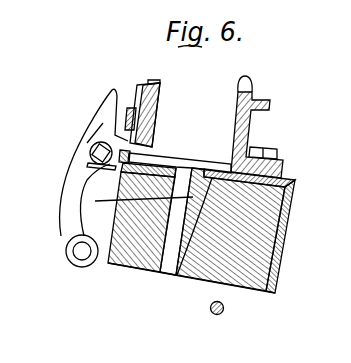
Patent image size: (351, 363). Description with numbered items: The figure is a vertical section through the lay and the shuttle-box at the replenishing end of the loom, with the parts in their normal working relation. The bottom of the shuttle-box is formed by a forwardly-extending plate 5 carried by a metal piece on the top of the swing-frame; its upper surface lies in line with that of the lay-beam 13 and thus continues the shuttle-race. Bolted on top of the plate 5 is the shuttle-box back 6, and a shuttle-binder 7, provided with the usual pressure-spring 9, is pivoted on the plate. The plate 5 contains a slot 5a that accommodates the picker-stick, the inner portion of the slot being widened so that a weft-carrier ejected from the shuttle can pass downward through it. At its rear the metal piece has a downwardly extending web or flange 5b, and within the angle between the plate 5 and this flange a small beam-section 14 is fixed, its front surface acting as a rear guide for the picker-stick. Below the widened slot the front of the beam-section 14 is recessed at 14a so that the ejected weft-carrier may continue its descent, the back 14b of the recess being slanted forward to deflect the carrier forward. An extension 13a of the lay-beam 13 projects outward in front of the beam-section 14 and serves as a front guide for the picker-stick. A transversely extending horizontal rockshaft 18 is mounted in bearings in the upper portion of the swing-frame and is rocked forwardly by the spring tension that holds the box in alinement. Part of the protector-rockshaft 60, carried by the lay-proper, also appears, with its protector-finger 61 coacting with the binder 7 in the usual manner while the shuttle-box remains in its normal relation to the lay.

The forwardly-extending plate 5 is at (120, 170).
The slot 5a is at (171, 158).
The web or flange 5b is at (287, 239).
The shuttle-box back 6 is at (250, 127).
The shuttle-binder 7 is at (148, 84).
The pressure-spring 9 is at (126, 120).
The lay-beam 13 is at (194, 161).
The extension of the lay-beam 13a is at (110, 265).
The beam-section 14 is at (263, 293).
The recess 14a is at (134, 202).
The back of the recess 14b is at (175, 276).
The rockshaft 18 is at (222, 314).
The protector-rockshaft 60 is at (66, 258).
The protector-finger 61 is at (68, 173).